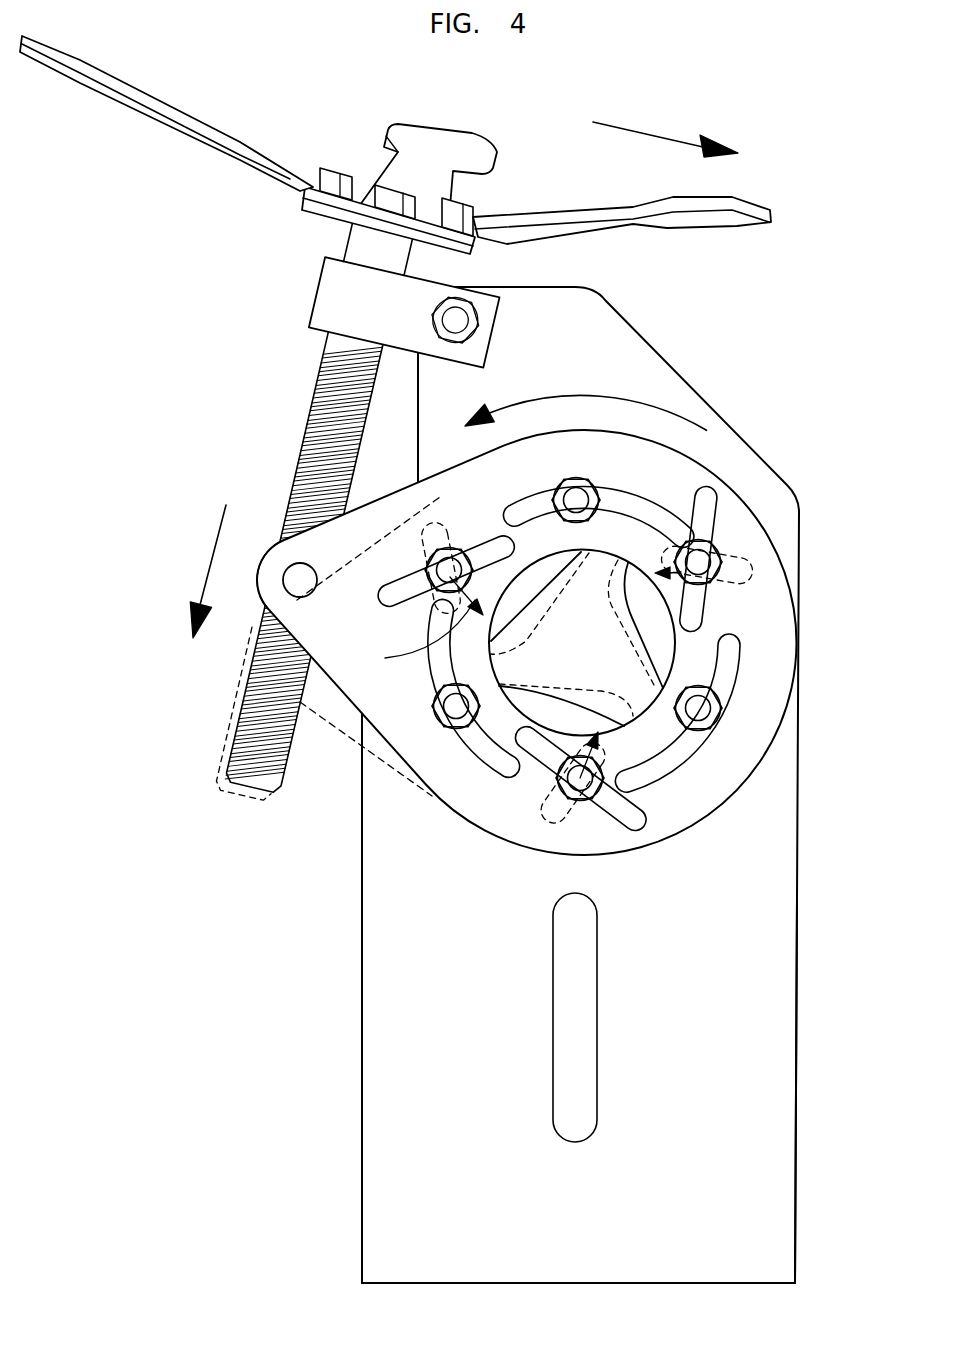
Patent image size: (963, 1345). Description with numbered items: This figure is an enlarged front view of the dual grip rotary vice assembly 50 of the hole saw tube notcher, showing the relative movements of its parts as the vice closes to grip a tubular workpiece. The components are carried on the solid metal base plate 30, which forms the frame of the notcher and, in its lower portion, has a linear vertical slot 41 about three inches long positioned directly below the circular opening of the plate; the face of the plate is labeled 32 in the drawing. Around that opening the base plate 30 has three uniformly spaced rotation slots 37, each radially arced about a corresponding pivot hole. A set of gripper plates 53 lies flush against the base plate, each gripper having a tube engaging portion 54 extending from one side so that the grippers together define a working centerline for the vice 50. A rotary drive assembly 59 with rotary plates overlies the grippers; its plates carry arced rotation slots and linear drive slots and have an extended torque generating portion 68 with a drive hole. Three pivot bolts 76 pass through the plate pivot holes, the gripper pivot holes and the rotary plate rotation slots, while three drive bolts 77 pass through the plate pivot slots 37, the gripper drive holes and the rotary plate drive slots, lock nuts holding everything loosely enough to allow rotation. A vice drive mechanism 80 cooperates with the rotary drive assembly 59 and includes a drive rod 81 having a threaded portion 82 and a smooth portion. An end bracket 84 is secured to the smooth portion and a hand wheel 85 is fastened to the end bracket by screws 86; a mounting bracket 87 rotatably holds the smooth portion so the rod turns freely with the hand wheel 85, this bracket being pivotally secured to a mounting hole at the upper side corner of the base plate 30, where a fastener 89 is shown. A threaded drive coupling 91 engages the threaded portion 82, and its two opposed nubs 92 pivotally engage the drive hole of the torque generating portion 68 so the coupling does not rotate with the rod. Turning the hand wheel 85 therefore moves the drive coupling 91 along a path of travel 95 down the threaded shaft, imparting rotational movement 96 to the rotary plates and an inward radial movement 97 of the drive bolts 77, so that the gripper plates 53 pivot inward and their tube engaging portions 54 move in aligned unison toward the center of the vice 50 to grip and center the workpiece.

The base plate 30 is at (513, 785).
The frame plate 32 is at (400, 1136).
The rotation slot 37 is at (447, 526).
The vertical slot 41 is at (560, 1000).
The dual grip rotary vice assembly 50 is at (621, 596).
The gripper plate 53 is at (540, 602).
The tube engaging portion 54 is at (582, 692).
The rotary drive assembly 59 is at (613, 619).
The torque generating portion 68 is at (510, 642).
The pivot bolt 76 is at (445, 720).
The drive bolt 77 is at (562, 786).
The vice drive mechanism 80 is at (395, 431).
The drive rod 81 is at (299, 565).
The threaded portion 82 is at (303, 563).
The end bracket 84 is at (358, 243).
The hand wheel 85 is at (170, 108).
The screw 86 is at (334, 182).
The mounting bracket 87 is at (404, 312).
The pivot nut 89 is at (455, 320).
The threaded drive coupling 91 is at (272, 546).
The nub 92 is at (296, 580).
The path of travel 95 is at (214, 548).
The rotational movement 96 is at (574, 395).
The inward radial movement 97 is at (388, 657).